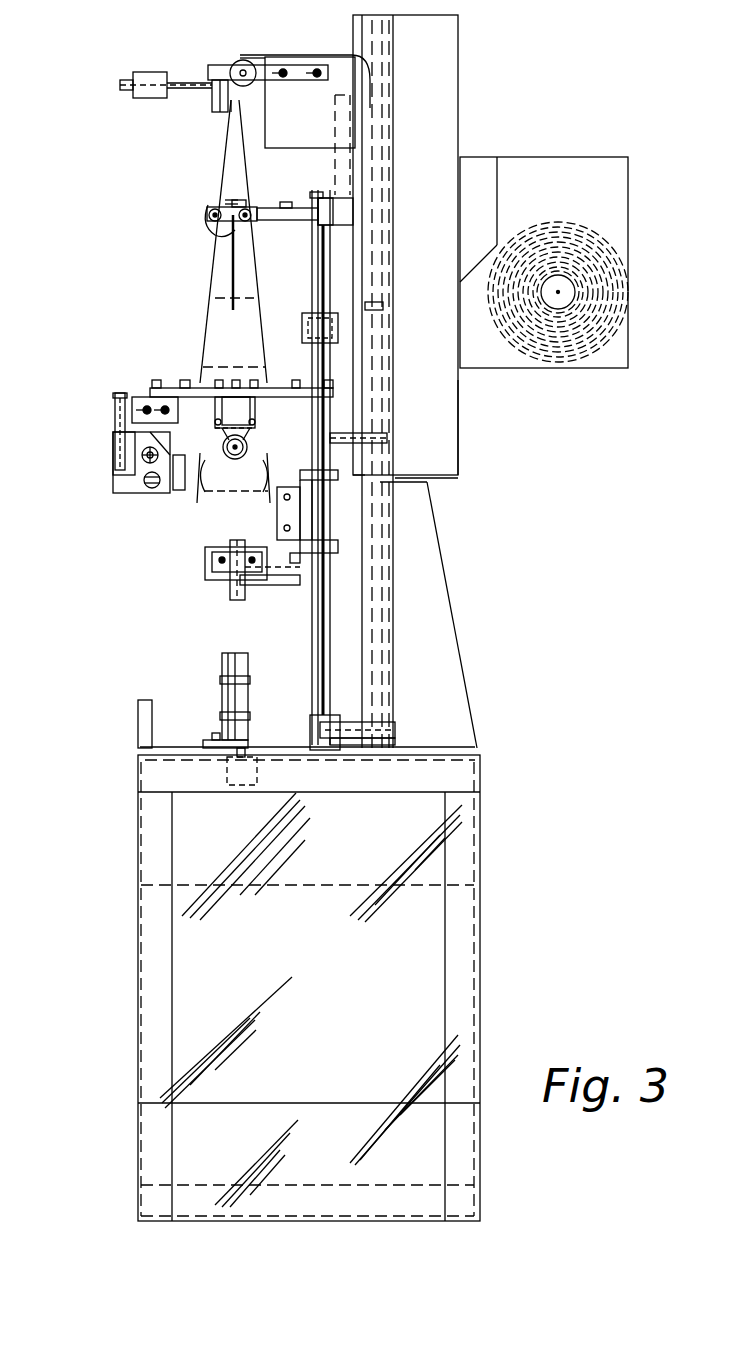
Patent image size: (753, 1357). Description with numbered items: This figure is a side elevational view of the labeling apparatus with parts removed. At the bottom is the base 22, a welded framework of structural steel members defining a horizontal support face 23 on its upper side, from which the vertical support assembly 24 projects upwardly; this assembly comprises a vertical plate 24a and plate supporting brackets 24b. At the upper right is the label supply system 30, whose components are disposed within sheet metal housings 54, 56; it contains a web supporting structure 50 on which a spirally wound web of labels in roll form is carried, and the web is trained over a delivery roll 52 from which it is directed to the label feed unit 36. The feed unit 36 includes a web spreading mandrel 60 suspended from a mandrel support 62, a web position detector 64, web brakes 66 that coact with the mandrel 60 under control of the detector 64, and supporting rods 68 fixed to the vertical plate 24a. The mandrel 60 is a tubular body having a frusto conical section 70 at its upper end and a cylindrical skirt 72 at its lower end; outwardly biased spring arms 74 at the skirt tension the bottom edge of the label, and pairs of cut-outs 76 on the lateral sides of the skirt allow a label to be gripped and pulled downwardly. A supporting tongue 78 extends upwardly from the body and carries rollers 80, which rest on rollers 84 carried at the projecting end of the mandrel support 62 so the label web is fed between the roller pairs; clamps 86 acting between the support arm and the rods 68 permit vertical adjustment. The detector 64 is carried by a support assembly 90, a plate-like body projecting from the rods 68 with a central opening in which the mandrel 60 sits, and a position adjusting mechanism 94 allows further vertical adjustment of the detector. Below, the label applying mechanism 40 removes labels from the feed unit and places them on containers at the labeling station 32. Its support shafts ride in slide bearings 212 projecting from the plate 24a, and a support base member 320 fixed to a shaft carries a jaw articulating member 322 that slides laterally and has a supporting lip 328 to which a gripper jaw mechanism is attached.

The base 22 is at (472, 942).
The horizontal support face 23 is at (172, 740).
The vertical support assembly 24 is at (388, 457).
The vertical plate 24a is at (365, 510).
The plate supporting brackets 24b is at (446, 600).
The label supply system 30 is at (610, 212).
The labeling station 32 is at (235, 650).
The label feed unit 36 is at (190, 318).
The label applying mechanism 40 is at (200, 560).
The web supporting structure 50 is at (560, 292).
The delivery roll 52 is at (242, 60).
The sheet metal housing 54 is at (520, 157).
The sheet metal housing 56 is at (450, 397).
The web spreading mandrel 60 is at (200, 368).
The mandrel support 62 is at (270, 207).
The web position detector 64 is at (138, 490).
The web brakes 66 is at (135, 448).
The supporting rods 68 is at (340, 265).
The frusto conical section 70 is at (238, 322).
The cylindrical skirt 72 is at (187, 397).
The spring arms 74 is at (198, 470).
The cut-outs 76 is at (222, 492).
The supporting tongue 78 is at (230, 235).
The rollers 80 is at (225, 200).
The rollers 84 is at (220, 215).
The clamps 86 is at (345, 200).
The support assembly 90 is at (207, 415).
The position adjusting mechanism 94 is at (118, 415).
The slide bearings 212 is at (320, 320).
The support base member 320 is at (295, 517).
The jaw articulating member 322 is at (290, 565).
The supporting lip 328 is at (272, 583).